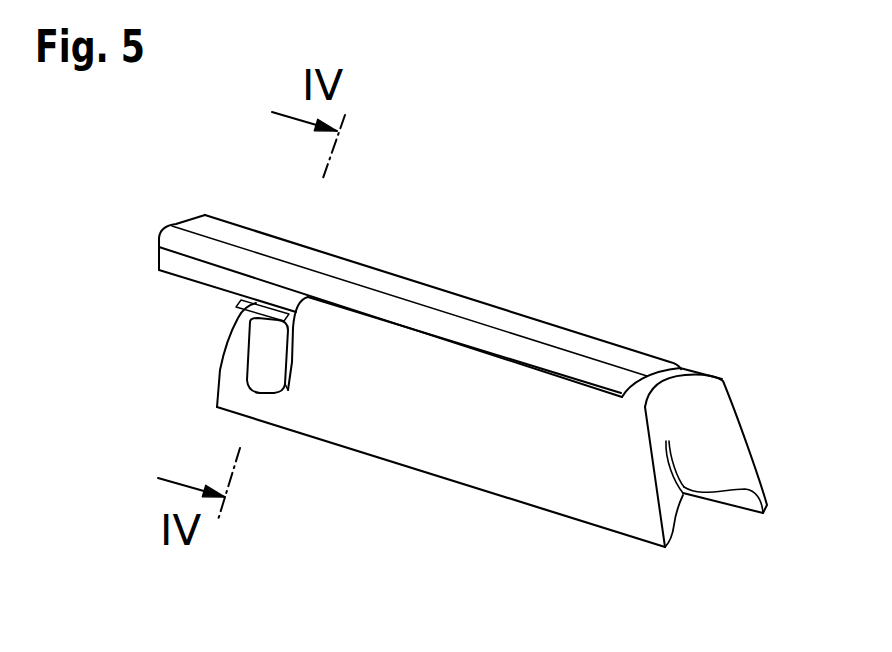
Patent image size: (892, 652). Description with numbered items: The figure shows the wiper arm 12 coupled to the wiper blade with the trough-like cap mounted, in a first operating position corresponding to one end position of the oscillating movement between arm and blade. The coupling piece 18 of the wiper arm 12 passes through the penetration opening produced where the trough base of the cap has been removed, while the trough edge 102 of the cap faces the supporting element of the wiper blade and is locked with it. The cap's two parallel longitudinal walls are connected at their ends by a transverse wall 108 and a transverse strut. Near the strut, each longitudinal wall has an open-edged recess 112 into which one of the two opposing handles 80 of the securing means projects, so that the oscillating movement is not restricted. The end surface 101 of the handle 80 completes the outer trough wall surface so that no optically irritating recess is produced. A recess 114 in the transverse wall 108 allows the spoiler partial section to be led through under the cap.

The wiper arm 12 is at (247, 211).
The coupling piece 18 is at (597, 347).
The handle 80 is at (226, 383).
The end surface 101 is at (253, 333).
The trough edge 102 is at (530, 507).
The transverse wall 108 is at (730, 418).
The recess 112 is at (288, 392).
The recess 114 is at (692, 503).